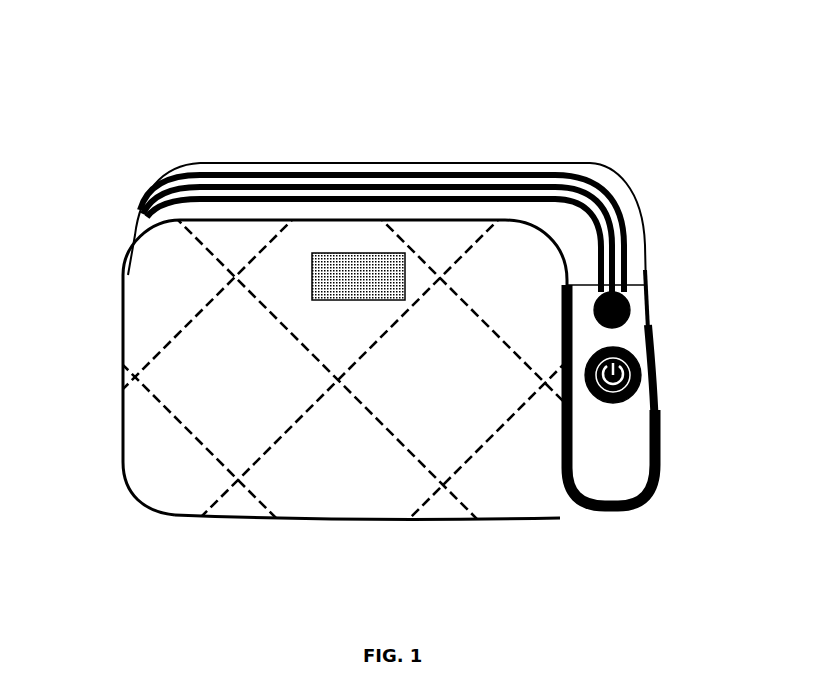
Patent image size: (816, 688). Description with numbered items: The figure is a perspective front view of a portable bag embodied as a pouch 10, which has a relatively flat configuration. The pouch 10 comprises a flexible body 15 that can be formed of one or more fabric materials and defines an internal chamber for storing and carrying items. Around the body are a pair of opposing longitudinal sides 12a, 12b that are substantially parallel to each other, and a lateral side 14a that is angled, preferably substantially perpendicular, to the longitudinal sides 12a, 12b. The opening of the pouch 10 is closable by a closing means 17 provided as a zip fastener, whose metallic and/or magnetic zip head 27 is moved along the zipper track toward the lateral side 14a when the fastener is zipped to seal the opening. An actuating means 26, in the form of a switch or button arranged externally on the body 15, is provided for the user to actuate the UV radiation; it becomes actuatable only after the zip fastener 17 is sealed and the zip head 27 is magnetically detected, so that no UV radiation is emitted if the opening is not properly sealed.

The pouch 10 is at (137, 146).
The closing means 17 is at (490, 186).
The zip head 27 is at (630, 303).
The actuating means 26 is at (642, 368).
The longitudinal side 12b is at (660, 413).
The lateral side 14a is at (613, 443).
The longitudinal side 12a is at (560, 520).
The flexible body 15 is at (148, 467).